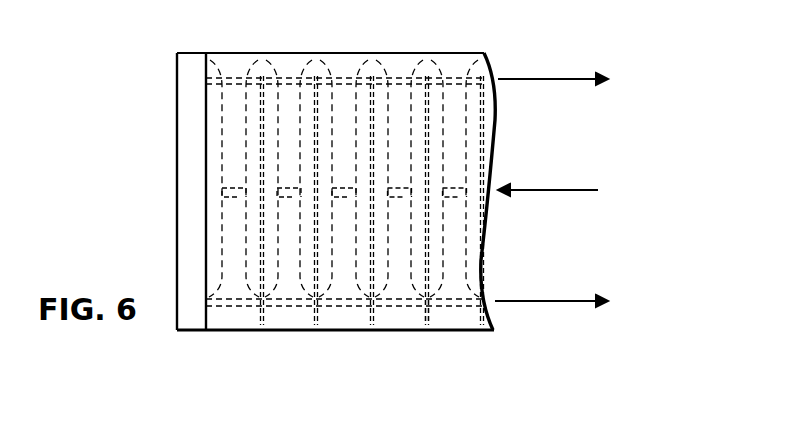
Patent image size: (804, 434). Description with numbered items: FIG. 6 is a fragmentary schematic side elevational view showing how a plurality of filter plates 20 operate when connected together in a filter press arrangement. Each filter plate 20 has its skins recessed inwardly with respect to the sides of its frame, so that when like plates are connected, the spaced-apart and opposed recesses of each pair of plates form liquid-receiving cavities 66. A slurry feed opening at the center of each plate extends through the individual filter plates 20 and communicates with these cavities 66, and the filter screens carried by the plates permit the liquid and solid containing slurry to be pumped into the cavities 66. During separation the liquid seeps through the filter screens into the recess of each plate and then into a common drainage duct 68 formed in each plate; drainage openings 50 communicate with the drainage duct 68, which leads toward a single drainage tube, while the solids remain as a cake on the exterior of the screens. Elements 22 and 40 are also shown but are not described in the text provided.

The filter plate 20 is at (330, 53).
The end header 22 is at (188, 152).
The housing wall 40 is at (463, 190).
The drainage opening 50 is at (432, 307).
The liquid-receiving cavity 66 is at (433, 157).
The drainage duct 68 is at (460, 297).